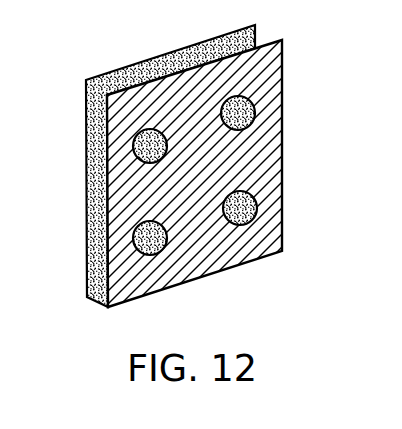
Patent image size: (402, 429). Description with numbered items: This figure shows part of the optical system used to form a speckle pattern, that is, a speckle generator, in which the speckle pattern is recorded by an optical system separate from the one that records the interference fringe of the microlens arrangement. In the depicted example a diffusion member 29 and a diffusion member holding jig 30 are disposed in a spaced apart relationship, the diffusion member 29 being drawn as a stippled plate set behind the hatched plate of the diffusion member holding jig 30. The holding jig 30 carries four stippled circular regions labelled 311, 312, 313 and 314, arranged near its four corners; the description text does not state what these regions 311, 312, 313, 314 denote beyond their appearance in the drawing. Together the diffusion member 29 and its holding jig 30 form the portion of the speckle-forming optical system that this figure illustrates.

The diffusion member 29 is at (150, 63).
The diffusion member holding jig 30 is at (283, 53).
The first circular hole/spot 311 is at (133, 149).
The second circular hole/spot 312 is at (255, 113).
The third circular hole/spot 313 is at (134, 242).
The fourth circular hole/spot 314 is at (257, 207).